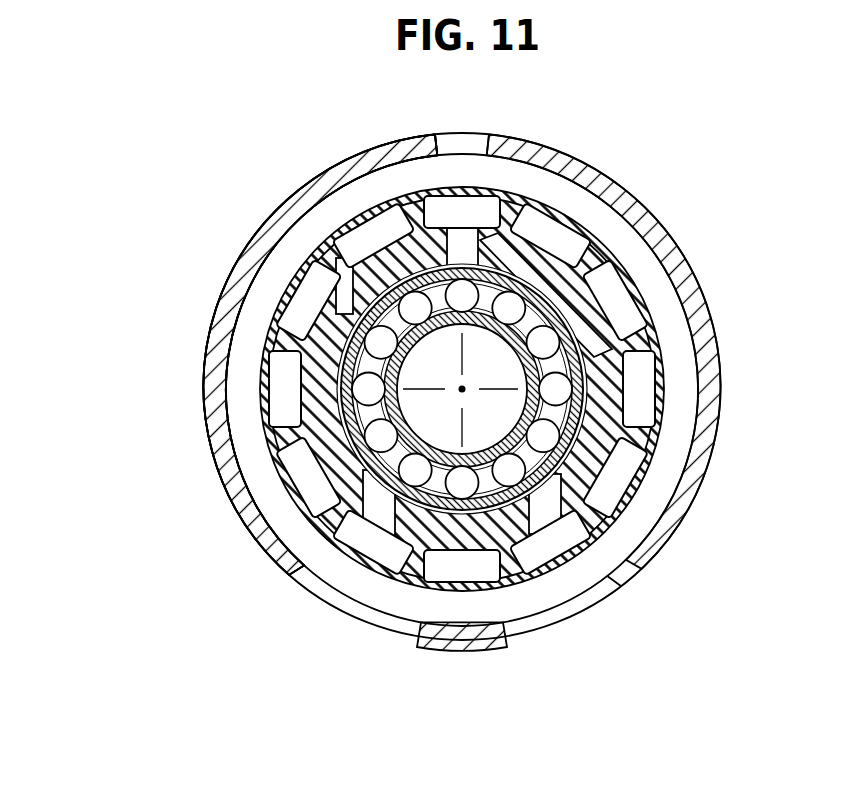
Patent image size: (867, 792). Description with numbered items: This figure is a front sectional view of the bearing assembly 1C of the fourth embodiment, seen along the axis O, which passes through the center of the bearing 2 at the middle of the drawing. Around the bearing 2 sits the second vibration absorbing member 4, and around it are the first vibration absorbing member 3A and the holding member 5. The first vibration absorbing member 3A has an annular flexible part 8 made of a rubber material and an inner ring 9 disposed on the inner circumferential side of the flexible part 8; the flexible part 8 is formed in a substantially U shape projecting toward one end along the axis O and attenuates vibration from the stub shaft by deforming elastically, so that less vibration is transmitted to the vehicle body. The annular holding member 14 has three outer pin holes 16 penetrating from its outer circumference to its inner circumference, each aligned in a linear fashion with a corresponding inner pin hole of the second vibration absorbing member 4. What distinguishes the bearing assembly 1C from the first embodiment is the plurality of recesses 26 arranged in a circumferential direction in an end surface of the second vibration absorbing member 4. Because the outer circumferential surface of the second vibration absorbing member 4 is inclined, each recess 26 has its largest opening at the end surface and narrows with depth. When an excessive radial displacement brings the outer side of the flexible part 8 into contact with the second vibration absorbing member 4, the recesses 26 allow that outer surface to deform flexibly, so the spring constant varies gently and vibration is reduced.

The bearing assembly 1C is at (162, 157).
The first vibration absorbing member 3A is at (664, 202).
The outer pin holes 16 is at (438, 137).
The holding member 5 is at (250, 263).
The annular holding member 14 is at (250, 263).
The flexible part 8 is at (254, 308).
The second vibration absorbing member 4 is at (322, 243).
The recesses 26 is at (352, 228).
The inner ring 9 is at (343, 363).
The bearing 2 is at (363, 392).
The axis O is at (462, 389).